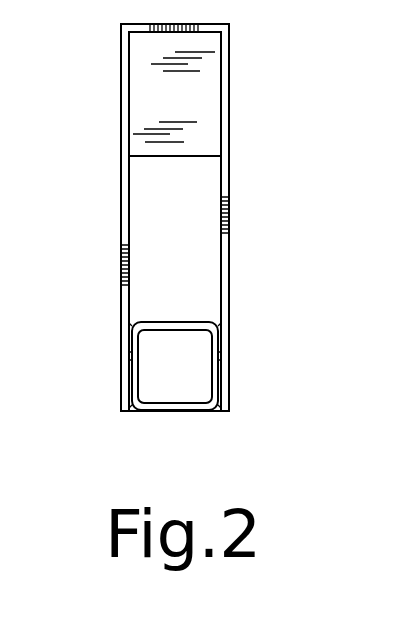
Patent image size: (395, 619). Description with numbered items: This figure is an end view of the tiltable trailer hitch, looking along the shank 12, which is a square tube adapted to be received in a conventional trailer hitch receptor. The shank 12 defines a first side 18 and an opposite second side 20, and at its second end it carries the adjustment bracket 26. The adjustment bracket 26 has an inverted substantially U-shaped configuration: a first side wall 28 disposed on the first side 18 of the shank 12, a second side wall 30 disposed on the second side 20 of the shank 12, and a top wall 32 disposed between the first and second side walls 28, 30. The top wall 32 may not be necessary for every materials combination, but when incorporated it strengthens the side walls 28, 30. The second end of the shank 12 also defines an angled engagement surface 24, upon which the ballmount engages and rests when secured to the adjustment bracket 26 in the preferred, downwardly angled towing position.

The shank 12 is at (166, 333).
The first side 18 is at (140, 378).
The second side 20 is at (228, 374).
The engagement surface 24 is at (140, 342).
The adjustment bracket 26 is at (232, 111).
The first side wall 28 is at (120, 72).
The second side wall 30 is at (228, 137).
The top wall 32 is at (229, 80).